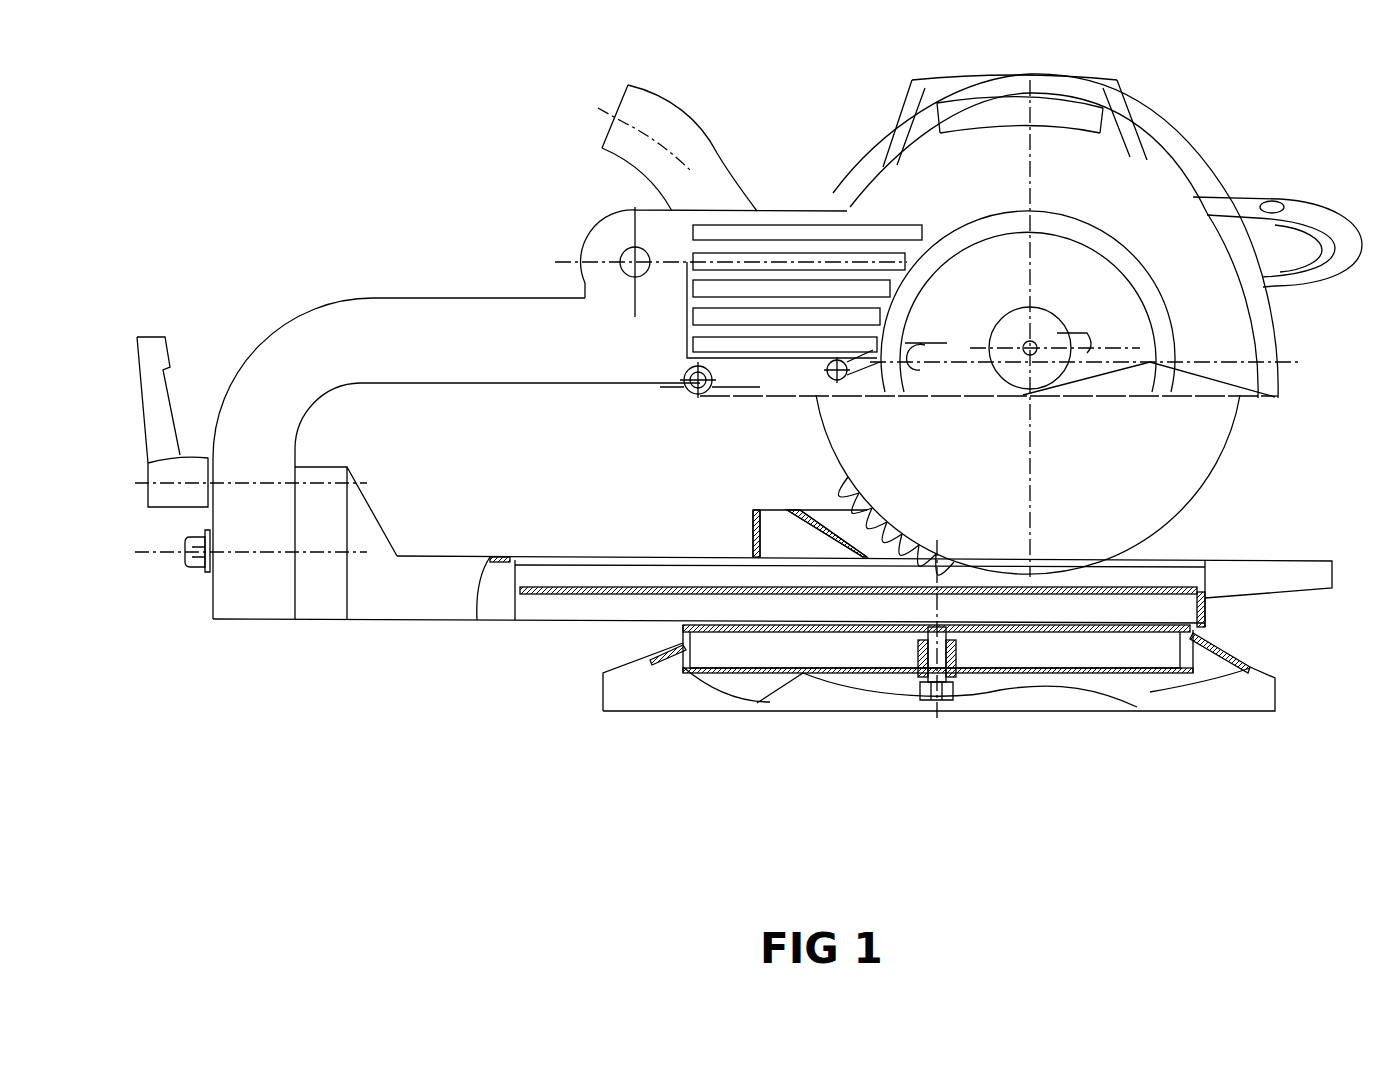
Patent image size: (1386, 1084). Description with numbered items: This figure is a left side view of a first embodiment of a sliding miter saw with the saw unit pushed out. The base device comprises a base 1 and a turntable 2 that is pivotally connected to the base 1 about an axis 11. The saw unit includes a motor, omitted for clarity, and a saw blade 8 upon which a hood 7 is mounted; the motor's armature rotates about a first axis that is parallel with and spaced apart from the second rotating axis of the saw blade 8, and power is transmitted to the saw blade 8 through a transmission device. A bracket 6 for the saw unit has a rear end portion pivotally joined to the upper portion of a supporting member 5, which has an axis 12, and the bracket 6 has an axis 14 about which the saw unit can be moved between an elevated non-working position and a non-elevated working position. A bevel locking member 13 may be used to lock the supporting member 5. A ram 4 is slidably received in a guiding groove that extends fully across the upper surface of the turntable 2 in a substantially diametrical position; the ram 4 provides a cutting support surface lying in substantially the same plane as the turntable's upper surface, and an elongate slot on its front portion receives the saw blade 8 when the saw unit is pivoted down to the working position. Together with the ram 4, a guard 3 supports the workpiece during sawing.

The base 1 is at (1137, 673).
The turntable 2 is at (973, 633).
The guard 3 is at (805, 523).
The ram 4 is at (670, 593).
The supporting member 5 is at (252, 522).
The bracket 6 is at (733, 293).
The hood 7 is at (987, 290).
The saw blade 8 is at (1138, 450).
The axis 11 is at (947, 673).
The axis 12 is at (203, 563).
The bevel locking member 13 is at (180, 473).
The axis 14 is at (630, 255).